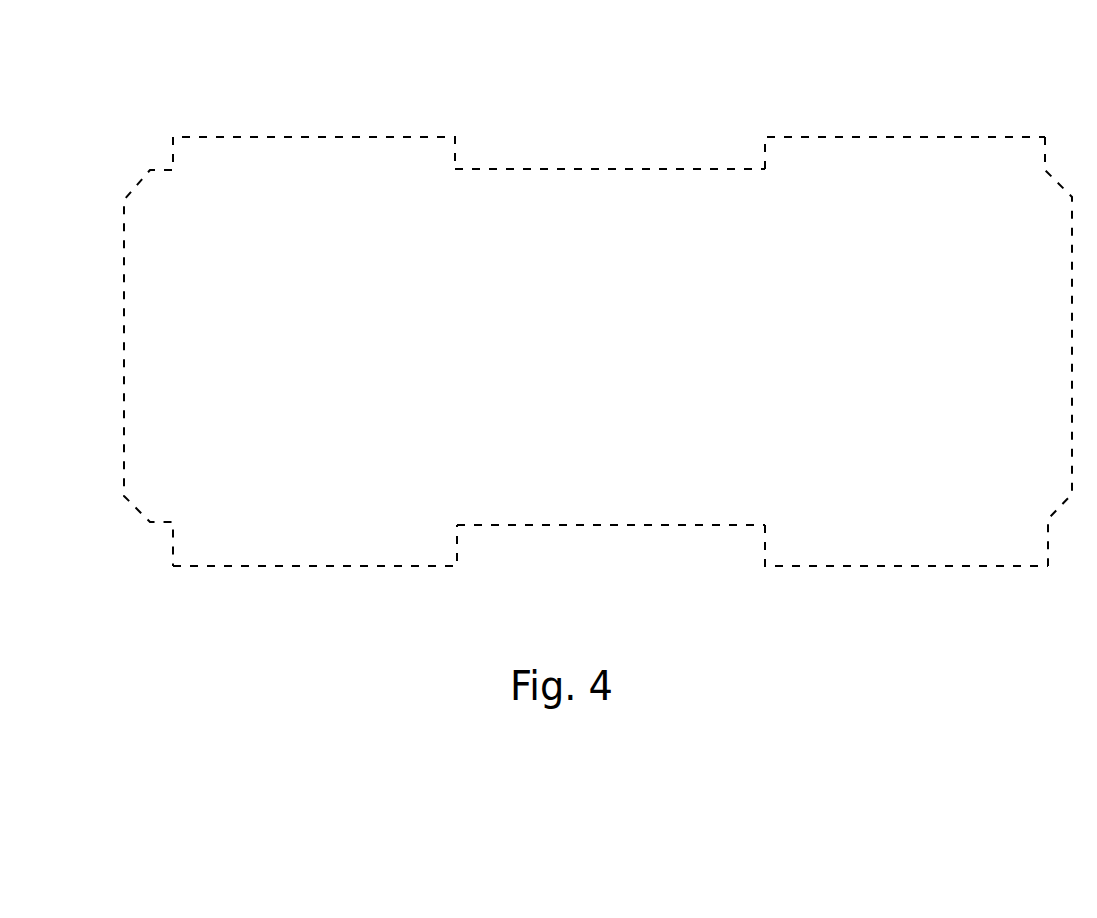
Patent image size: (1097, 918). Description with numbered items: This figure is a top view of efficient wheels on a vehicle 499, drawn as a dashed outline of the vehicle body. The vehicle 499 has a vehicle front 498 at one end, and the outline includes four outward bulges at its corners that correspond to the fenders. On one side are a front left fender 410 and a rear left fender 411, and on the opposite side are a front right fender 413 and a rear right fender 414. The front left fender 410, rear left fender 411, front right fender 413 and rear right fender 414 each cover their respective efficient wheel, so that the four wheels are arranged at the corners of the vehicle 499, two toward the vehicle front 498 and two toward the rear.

The vehicle 499 is at (610, 107).
The vehicle front 498 is at (148, 363).
The front right fender 413 is at (312, 158).
The rear right fender 414 is at (888, 155).
The front left fender 410 is at (313, 540).
The rear left fender 411 is at (902, 543).